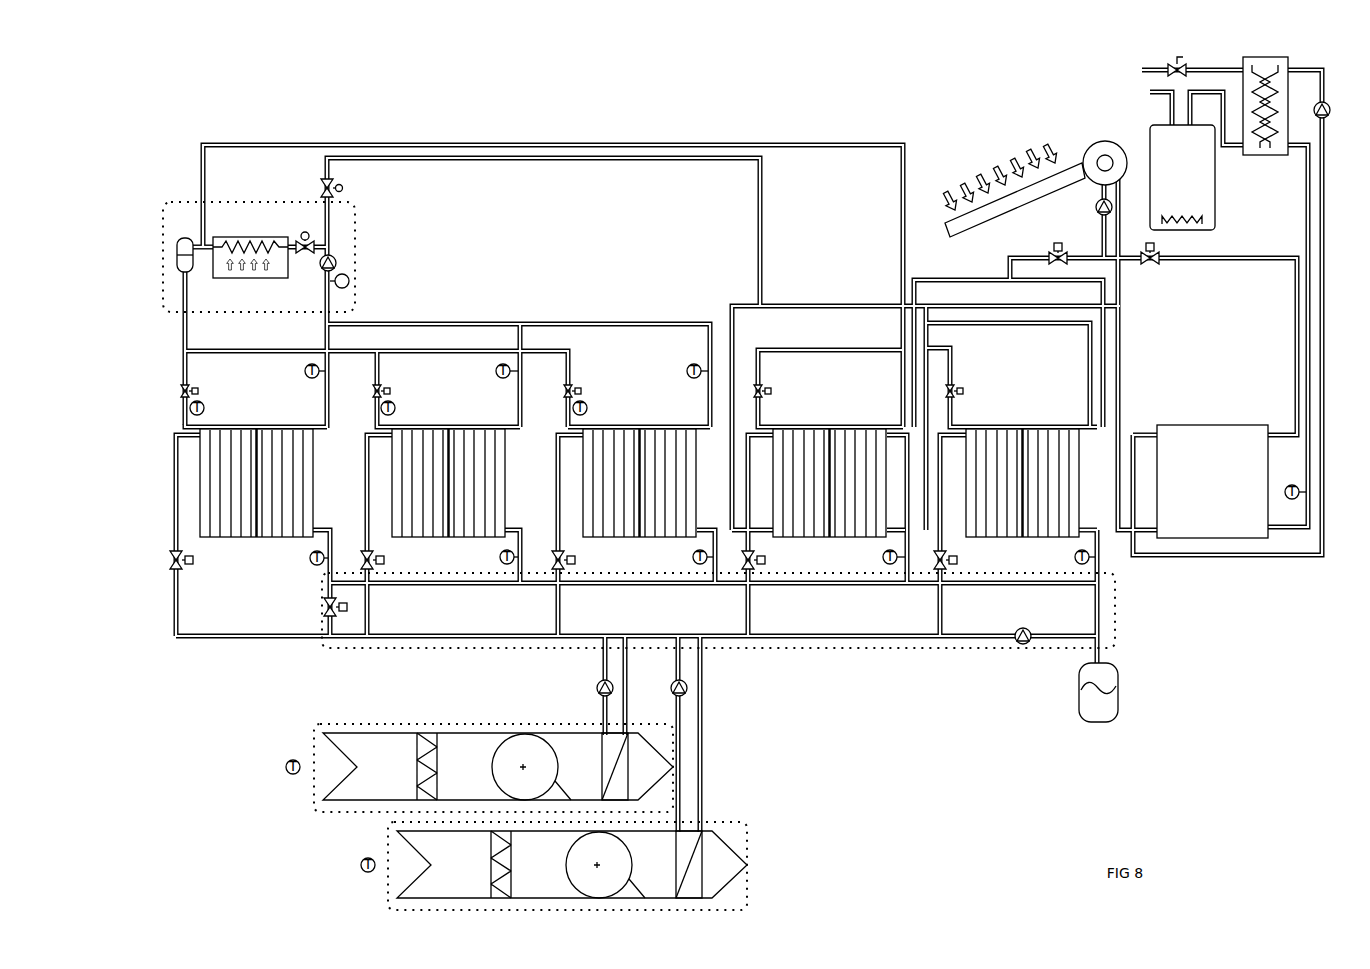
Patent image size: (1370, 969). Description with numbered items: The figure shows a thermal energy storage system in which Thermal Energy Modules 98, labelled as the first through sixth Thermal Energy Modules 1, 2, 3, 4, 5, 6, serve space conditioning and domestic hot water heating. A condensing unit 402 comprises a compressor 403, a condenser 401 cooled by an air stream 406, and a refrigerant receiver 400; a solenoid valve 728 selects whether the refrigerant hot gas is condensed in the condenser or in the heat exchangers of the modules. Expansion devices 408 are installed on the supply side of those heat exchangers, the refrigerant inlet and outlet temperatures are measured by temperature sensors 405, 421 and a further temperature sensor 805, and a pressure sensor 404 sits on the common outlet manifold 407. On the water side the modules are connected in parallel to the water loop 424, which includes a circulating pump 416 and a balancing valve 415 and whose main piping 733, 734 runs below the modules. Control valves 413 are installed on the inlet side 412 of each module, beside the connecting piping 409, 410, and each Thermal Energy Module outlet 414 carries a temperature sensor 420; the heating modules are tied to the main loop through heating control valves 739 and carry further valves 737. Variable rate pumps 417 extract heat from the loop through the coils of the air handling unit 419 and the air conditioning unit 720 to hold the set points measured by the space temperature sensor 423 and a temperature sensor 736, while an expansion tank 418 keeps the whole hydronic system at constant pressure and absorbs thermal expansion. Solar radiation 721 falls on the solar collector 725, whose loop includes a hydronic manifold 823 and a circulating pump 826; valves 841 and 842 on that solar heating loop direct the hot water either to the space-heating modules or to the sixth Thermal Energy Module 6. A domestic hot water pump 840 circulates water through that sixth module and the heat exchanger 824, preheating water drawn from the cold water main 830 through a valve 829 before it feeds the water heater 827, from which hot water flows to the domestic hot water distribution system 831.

The refrigerant receiver 400 is at (185, 238).
The condenser 401 is at (250, 237).
The condensing unit 402 is at (240, 206).
The compressor 403 is at (338, 264).
The pressure sensor 404 is at (349, 281).
The temperature sensor 405 is at (600, 408).
The air stream 406 is at (232, 274).
The common outlet manifold 407 is at (443, 321).
The expansion device 408 is at (588, 391).
The pipe elbow 409 is at (183, 424).
The return pipe 410 is at (322, 438).
The inlet side 412 is at (172, 440).
The control valve 413 is at (585, 560).
The Thermal Energy Module outlet 414 is at (331, 533).
The balancing valve 415 is at (322, 603).
The circulating pump 416 is at (1023, 628).
The variable rate pump 417 is at (672, 682).
The expansion tank 418 is at (1078, 684).
The air handling unit 419 is at (313, 732).
The temperature sensor 420 is at (309, 560).
The temperature sensor 421 is at (305, 371).
The space temperature sensor 423 is at (285, 767).
The water loop 424 is at (420, 650).
The Thermal Energy Module 98 is at (1020, 538).
The air conditioning unit 720 is at (387, 830).
The solar radiation 721 is at (1003, 170).
The solar collector 725 is at (948, 240).
The solenoid valve 728 is at (320, 188).
The return header 733 is at (860, 586).
The supply header 734 is at (860, 649).
The temperature sensor 736 is at (360, 865).
The air vent valve 737 is at (970, 391).
The heating control valve 739 is at (765, 560).
The temperature sensor 805 is at (496, 371).
The solar loop heat exchanger 823 is at (1123, 141).
The heat exchanger 824 is at (1265, 57).
The solar pump 826 is at (1095, 207).
The water heater 827 is at (1216, 192).
The valve 829 is at (1175, 56).
The cold water main 830 is at (1141, 65).
The domestic hot water distribution system 831 is at (1148, 85).
The pump 840 is at (1331, 110).
The valve 841 is at (1053, 250).
The valve 842 is at (1160, 266).
The first Thermal Energy Module 1 is at (376, 349).
The second Thermal Energy Module 2 is at (448, 375).
The third Thermal Energy Module 3 is at (639, 416).
The fourth Thermal Energy Module 4 is at (926, 418).
The fifth Thermal Energy Module 5 is at (1008, 353).
The sixth Thermal Energy Module 6 is at (1231, 472).